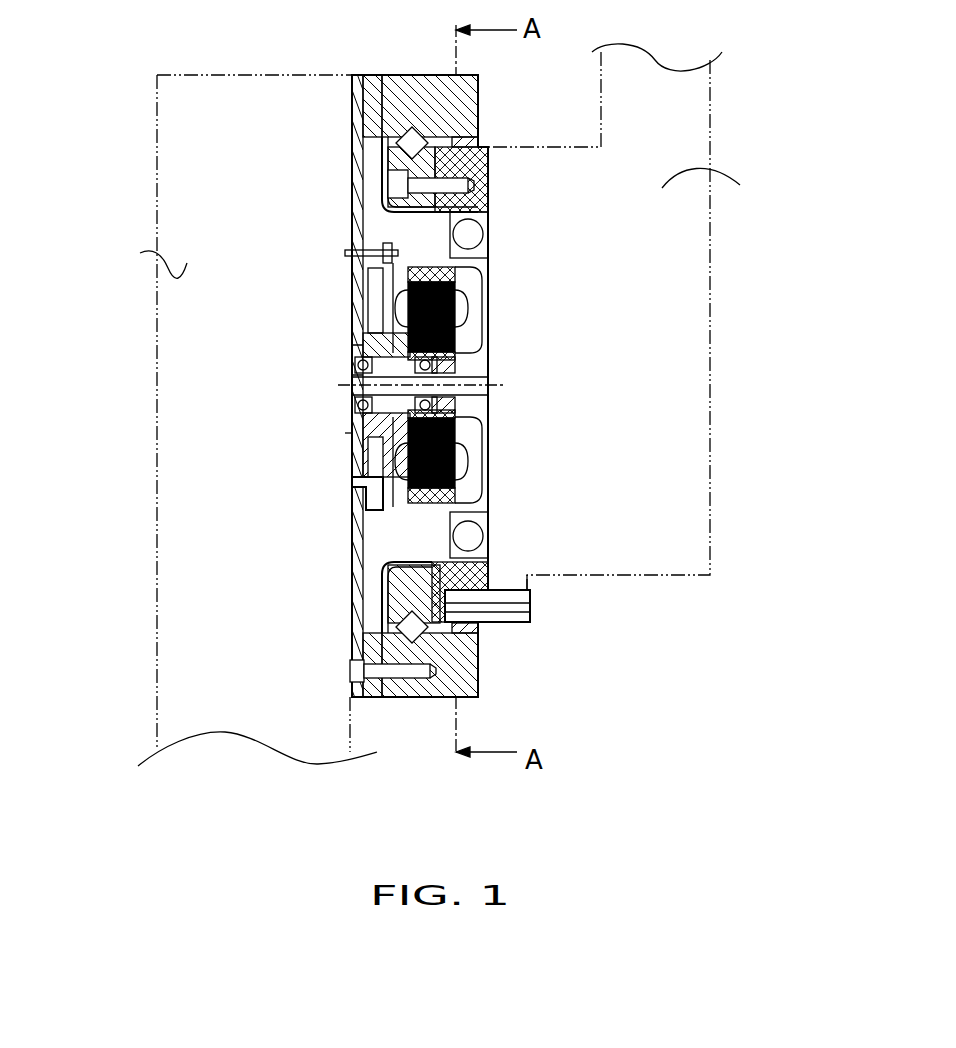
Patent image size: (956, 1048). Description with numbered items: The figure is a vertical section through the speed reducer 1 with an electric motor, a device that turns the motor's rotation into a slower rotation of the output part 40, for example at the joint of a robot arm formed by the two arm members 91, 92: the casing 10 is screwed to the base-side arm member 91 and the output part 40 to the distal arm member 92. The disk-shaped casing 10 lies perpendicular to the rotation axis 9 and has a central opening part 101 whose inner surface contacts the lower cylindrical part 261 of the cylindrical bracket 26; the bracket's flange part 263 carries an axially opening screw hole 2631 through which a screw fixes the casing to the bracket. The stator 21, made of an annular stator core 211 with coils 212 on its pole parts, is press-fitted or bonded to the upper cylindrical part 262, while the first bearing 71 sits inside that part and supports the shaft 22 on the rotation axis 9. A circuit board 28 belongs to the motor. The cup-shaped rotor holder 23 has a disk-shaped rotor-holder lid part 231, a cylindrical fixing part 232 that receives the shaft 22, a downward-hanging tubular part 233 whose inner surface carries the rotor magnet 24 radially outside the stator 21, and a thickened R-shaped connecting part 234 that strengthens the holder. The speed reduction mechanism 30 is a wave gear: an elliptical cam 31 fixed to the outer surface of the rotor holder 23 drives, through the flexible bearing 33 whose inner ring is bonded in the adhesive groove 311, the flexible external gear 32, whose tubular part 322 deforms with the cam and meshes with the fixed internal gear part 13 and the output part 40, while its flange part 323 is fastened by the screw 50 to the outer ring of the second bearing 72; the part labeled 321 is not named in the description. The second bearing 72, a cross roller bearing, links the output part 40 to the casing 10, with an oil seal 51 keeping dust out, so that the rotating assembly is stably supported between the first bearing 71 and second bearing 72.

The speed reducer with electric motor 1 is at (285, 45).
The rotation axis 9 is at (450, 372).
The casing 10 is at (355, 183).
The opening part 101 is at (350, 353).
The fixed internal gear part 13 is at (480, 197).
The stator 21 is at (603, 425).
The stator core 211 is at (480, 432).
The coil 212 is at (480, 458).
The shaft 22 is at (445, 397).
The rotor holder 23 is at (627, 220).
The rotor-holder lid part 231 is at (480, 332).
The fixing part 232 is at (480, 360).
The tubular part 233 is at (480, 248).
The connecting part 234 is at (480, 268).
The rotor magnet 24 is at (480, 488).
The bracket 26 is at (240, 415).
The lower cylindrical part 261 is at (345, 413).
The upper cylindrical part 262 is at (352, 437).
The flange part 263 is at (352, 462).
The screw hole 2631 is at (352, 488).
The circuit board 28 is at (350, 277).
The speed reduction mechanism 30 is at (583, 525).
The cam 31 is at (480, 518).
The adhesive groove 311 is at (352, 538).
The flexible external gear 32 is at (597, 592).
The output shaft portion 321 is at (470, 593).
The tubular part 322 is at (470, 612).
The flange part 323 is at (440, 640).
The flexible bearing 33 is at (480, 547).
The output part 40 is at (488, 151).
The screw 50 is at (357, 688).
The oil seal 51 is at (355, 647).
The first bearing 71 is at (385, 340).
The second bearing 72 is at (430, 127).
The arm member 91 is at (236, 508).
The arm member 92 is at (634, 333).